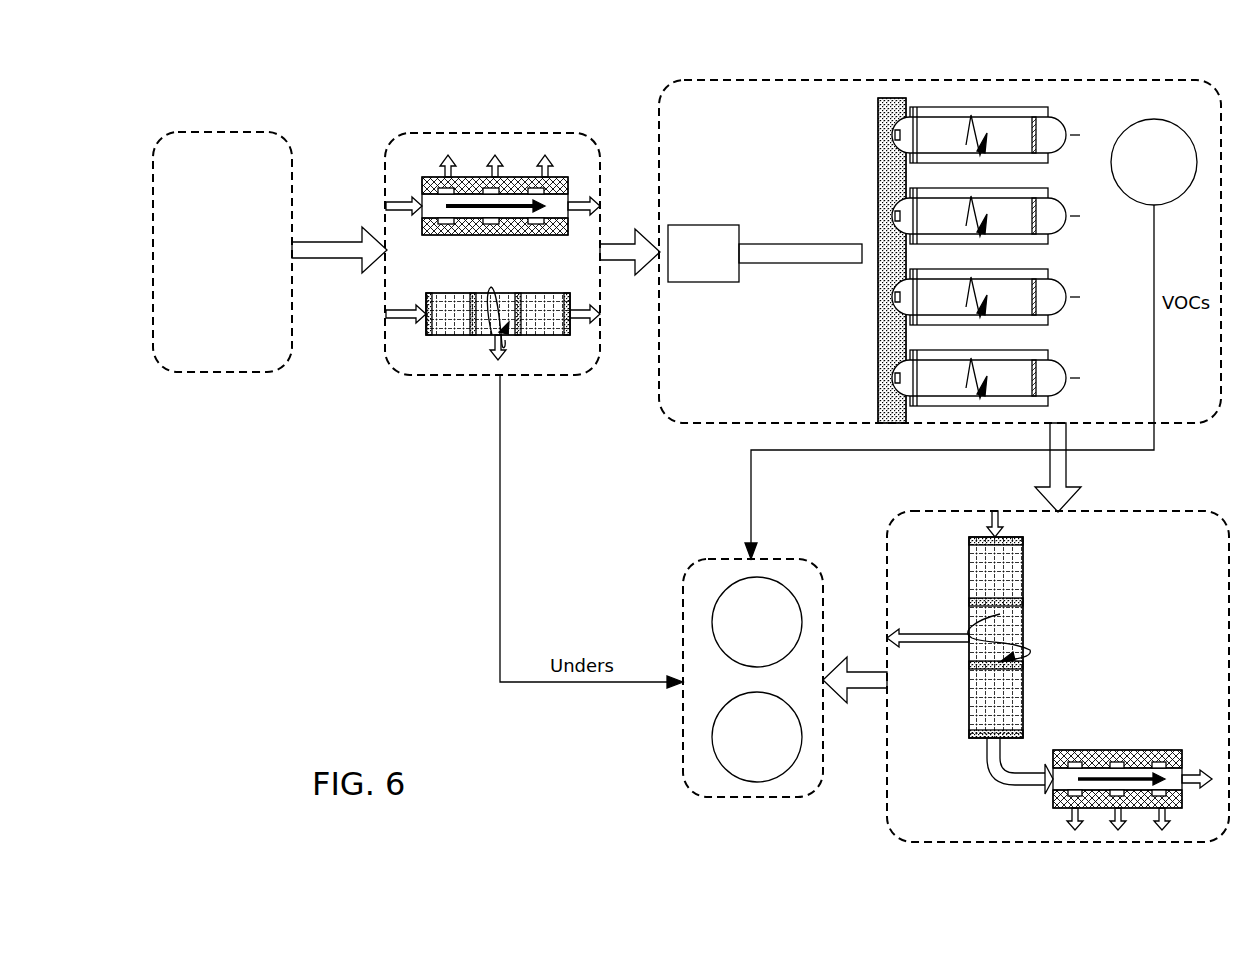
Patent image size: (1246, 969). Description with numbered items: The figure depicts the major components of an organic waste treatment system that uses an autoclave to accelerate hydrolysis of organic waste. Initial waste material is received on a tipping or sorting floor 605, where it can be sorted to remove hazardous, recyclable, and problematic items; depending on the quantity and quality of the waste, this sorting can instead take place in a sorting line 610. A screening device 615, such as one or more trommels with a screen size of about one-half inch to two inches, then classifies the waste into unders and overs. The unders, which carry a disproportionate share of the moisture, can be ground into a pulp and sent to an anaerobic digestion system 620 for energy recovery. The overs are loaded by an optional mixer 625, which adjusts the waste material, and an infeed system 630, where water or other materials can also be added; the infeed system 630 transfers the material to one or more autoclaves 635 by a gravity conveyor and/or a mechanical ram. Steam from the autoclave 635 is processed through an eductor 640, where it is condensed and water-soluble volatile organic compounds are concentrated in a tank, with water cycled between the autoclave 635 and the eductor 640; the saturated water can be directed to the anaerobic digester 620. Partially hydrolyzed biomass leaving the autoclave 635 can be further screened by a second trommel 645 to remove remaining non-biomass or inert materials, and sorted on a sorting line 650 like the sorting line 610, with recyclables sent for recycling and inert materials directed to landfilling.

The tipping or sorting floor 605 is at (222, 252).
The sorting line 610 is at (432, 176).
The screening device 615 is at (440, 335).
The anaerobic digestion system 620 is at (707, 560).
The mixer 625 is at (687, 225).
The infeed system 630 is at (810, 263).
The autoclave 635 is at (945, 107).
The eductor 640 is at (1138, 118).
The second trommel 645 is at (968, 537).
The sorting line 650 is at (1075, 750).